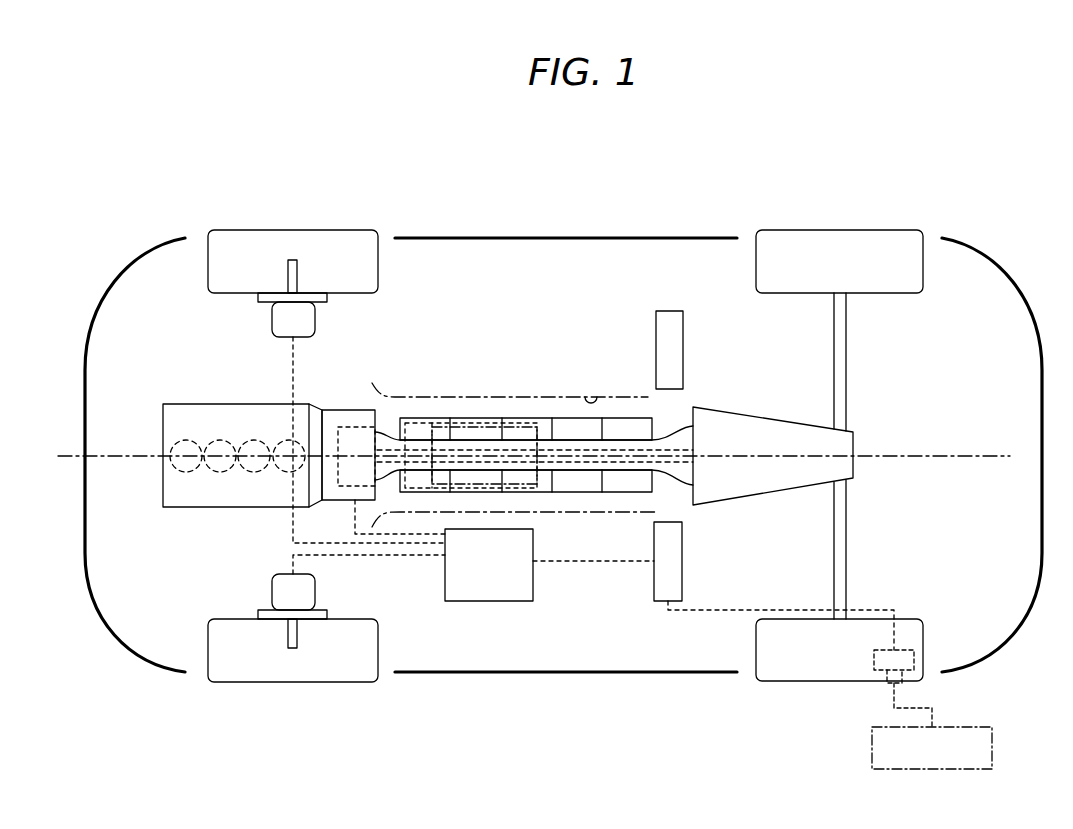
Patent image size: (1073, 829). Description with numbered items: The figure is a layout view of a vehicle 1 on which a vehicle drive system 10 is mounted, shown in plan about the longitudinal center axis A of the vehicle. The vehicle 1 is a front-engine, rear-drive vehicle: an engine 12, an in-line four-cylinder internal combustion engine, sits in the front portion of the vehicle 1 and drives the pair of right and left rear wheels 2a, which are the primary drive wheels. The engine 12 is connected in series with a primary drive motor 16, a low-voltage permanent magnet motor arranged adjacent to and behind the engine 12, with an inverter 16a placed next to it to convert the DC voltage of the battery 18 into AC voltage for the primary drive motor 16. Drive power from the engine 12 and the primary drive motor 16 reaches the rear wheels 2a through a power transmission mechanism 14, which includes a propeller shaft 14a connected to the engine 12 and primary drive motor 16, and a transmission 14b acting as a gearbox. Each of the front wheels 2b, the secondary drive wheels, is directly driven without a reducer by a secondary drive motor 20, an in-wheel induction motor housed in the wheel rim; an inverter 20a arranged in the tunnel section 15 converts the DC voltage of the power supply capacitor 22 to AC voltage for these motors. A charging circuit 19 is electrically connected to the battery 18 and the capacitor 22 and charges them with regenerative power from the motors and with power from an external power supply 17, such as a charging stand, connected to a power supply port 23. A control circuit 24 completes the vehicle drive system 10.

The vehicle 1 is at (720, 195).
The vehicle center axis A is at (62, 452).
The rear wheels 2a is at (836, 230).
The front wheels 2b is at (350, 230).
The vehicle drive system 10 is at (619, 328).
The engine 12 is at (240, 404).
The power transmission mechanism 14 is at (534, 414).
The propeller shaft 14a is at (662, 466).
The transmission 14b is at (852, 432).
The tunnel section 15 is at (592, 396).
The primary drive motor 16 is at (331, 410).
The inverter 16a is at (364, 427).
The external power supply 17 is at (985, 727).
The battery 18 is at (432, 418).
The charging circuit 19 is at (660, 601).
The secondary drive motor 20 is at (272, 321).
The inverter 20a is at (486, 418).
The power supply capacitor 22 is at (672, 311).
The power supply port 23 is at (903, 650).
The control circuit 24 is at (519, 601).